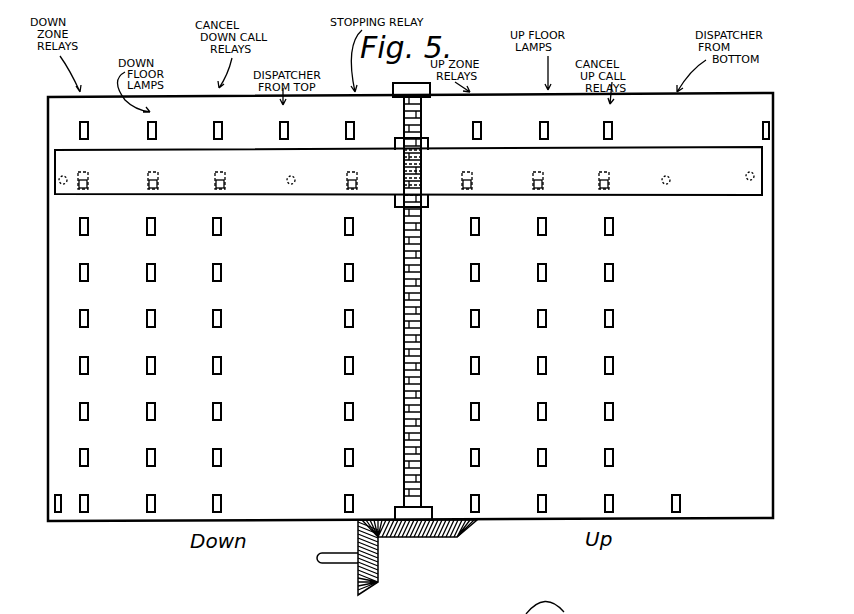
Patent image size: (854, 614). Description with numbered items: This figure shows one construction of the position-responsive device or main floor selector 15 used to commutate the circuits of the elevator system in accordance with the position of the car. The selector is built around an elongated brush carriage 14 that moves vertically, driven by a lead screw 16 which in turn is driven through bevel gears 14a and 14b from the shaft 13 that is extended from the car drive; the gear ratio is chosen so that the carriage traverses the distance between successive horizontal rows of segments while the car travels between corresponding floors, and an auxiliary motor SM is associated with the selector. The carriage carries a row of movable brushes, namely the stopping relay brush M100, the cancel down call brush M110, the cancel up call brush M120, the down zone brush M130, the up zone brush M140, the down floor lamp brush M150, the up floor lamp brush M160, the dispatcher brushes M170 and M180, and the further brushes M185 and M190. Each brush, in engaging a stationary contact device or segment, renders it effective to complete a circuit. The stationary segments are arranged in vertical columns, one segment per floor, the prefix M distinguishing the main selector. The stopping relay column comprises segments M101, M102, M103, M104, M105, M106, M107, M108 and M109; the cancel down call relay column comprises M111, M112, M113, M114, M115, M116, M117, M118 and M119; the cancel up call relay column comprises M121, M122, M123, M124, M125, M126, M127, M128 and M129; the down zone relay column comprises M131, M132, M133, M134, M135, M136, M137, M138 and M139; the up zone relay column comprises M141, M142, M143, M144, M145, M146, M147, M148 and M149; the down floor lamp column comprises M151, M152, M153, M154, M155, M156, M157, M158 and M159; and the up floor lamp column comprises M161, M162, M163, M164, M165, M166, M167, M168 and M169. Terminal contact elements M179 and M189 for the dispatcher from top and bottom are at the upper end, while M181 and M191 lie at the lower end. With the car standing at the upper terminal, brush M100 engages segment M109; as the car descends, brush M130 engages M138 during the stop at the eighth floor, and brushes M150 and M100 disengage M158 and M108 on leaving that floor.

The shaft 13 is at (355, 563).
The brush carriage 14 is at (393, 143).
The bevel gear 14a is at (440, 537).
The bevel gear 14b is at (378, 580).
The floor selector 15 is at (161, 548).
The lead screw 16 is at (421, 480).
The auxiliary motor SM is at (558, 604).
The stationary contact segment M101 is at (353, 503).
The stationary contact segment M102 is at (353, 457).
The stationary contact segment M103 is at (353, 411).
The stationary contact segment M104 is at (353, 365).
The stationary contact segment M105 is at (353, 318).
The stationary contact segment M106 is at (353, 272).
The stationary contact segment M107 is at (353, 226).
The stationary contact segment M108 is at (357, 185).
The stationary contact segment M109 is at (350, 122).
The movable brush M100 is at (362, 165).
The movable brush M110 is at (221, 172).
The stationary contact segment M111 is at (221, 503).
The stationary contact segment M112 is at (221, 457).
The stationary contact segment M113 is at (221, 411).
The stationary contact segment M114 is at (221, 365).
The stationary contact segment M115 is at (221, 318).
The stationary contact segment M116 is at (221, 272).
The stationary contact segment M117 is at (221, 226).
The stationary contact segment M118 is at (225, 185).
The stationary contact segment M119 is at (218, 122).
The movable brush M120 is at (601, 175).
The stationary contact segment M121 is at (613, 503).
The stationary contact segment M122 is at (613, 457).
The stationary contact segment M123 is at (613, 411).
The stationary contact segment M124 is at (613, 365).
The stationary contact segment M125 is at (613, 318).
The stationary contact segment M126 is at (613, 272).
The stationary contact segment M127 is at (613, 226).
The stationary contact segment M128 is at (599, 187).
The stationary contact segment M129 is at (608, 122).
The movable brush M130 is at (88, 185).
The stationary contact segment M131 is at (88, 503).
The stationary contact segment M132 is at (88, 457).
The stationary contact segment M133 is at (88, 411).
The stationary contact segment M134 is at (88, 365).
The stationary contact segment M135 is at (88, 318).
The stationary contact segment M136 is at (88, 272).
The stationary contact segment M137 is at (88, 226).
The stationary contact segment M138 is at (90, 165).
The stationary contact segment M139 is at (92, 116).
The movable brush M140 is at (464, 175).
The stationary contact segment M141 is at (479, 503).
The stationary contact segment M142 is at (479, 457).
The stationary contact segment M143 is at (479, 411).
The stationary contact segment M144 is at (479, 365).
The stationary contact segment M145 is at (479, 318).
The stationary contact segment M146 is at (479, 272).
The stationary contact segment M147 is at (479, 226).
The stationary contact segment M148 is at (462, 187).
The stationary contact segment M149 is at (477, 122).
The movable brush M150 is at (154, 172).
The stationary contact segment M151 is at (155, 503).
The stationary contact segment M152 is at (155, 457).
The stationary contact segment M153 is at (155, 411).
The stationary contact segment M154 is at (155, 365).
The stationary contact segment M155 is at (155, 318).
The stationary contact segment M156 is at (155, 272).
The stationary contact segment M157 is at (155, 226).
The stationary contact segment M158 is at (158, 185).
The stationary contact segment M159 is at (152, 122).
The movable brush M160 is at (535, 175).
The stationary contact segment M161 is at (546, 503).
The stationary contact segment M162 is at (546, 457).
The stationary contact segment M163 is at (546, 411).
The stationary contact segment M164 is at (546, 365).
The stationary contact segment M165 is at (546, 318).
The stationary contact segment M166 is at (546, 272).
The stationary contact segment M167 is at (546, 226).
The stationary contact segment M168 is at (533, 187).
The stationary contact segment M169 is at (544, 122).
The movable contact brush M170 is at (294, 176).
The stationary contact element M179 is at (284, 122).
The movable brush M180 is at (747, 173).
The stationary contact element M181 is at (57, 512).
The movable brush M185 is at (64, 192).
The stationary contact element M189 is at (766, 122).
The movable brush M190 is at (676, 166).
The stationary contact element M191 is at (680, 503).